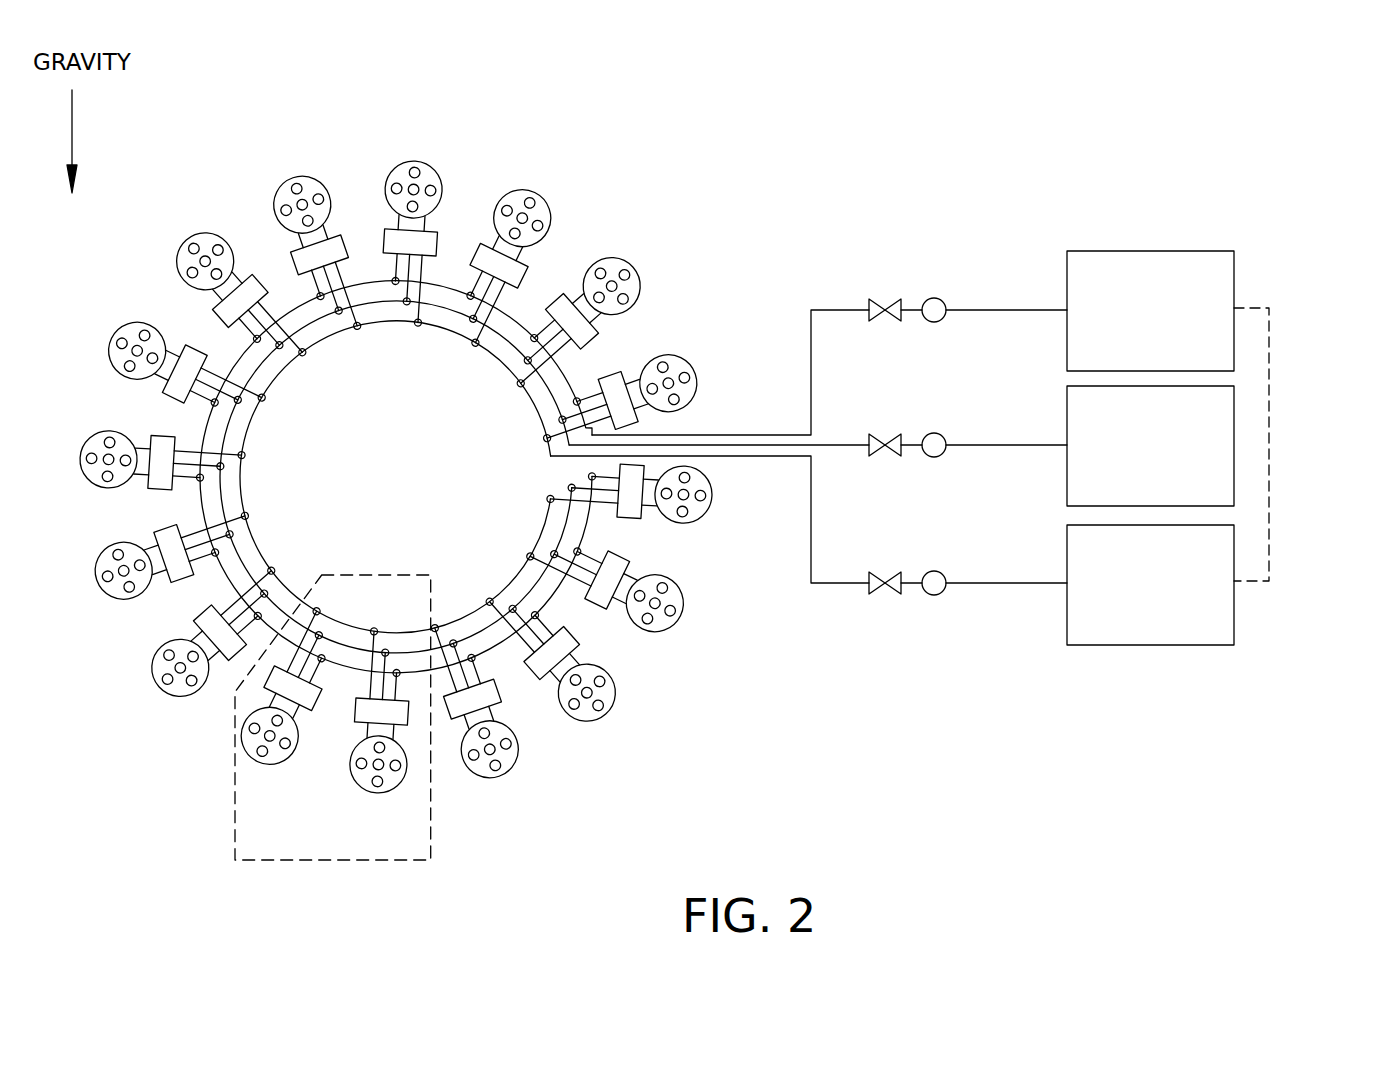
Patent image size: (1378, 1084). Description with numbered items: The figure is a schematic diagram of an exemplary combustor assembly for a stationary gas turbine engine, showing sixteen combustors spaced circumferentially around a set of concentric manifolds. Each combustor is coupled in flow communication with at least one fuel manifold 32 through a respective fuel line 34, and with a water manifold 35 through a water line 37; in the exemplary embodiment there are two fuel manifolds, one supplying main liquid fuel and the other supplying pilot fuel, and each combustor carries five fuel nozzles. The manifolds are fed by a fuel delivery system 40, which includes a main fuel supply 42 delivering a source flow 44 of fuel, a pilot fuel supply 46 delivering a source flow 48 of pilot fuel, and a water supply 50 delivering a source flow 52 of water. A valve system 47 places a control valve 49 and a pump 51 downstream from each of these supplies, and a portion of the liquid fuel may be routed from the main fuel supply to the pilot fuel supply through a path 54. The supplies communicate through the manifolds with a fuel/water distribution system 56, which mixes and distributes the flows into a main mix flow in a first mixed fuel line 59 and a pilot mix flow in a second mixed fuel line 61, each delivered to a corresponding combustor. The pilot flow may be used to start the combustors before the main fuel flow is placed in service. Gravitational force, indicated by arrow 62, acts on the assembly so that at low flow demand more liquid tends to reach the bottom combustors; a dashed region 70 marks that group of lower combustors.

The fuel manifold 32 is at (416, 477).
The fuel line 34 is at (418, 322).
The water manifold 35 is at (267, 357).
The water line 37 is at (583, 383).
The fuel delivery system 40 is at (964, 457).
The main fuel supply 42 is at (1234, 265).
The source flow of fuel 44 is at (967, 310).
The pilot fuel supply 46 is at (1234, 618).
The valve system 47 is at (820, 272).
The source flow of pilot fuel 48 is at (967, 583).
The control valve 49 is at (881, 300).
The water supply 50 is at (1234, 459).
The pump 51 is at (934, 298).
The source flow of water 52 is at (967, 445).
The path 54 is at (1269, 558).
The fuel/water distribution system 56 is at (632, 373).
The first mixed fuel line 59 is at (628, 376).
The second mixed fuel line 61 is at (644, 407).
The arrow 62 is at (73, 127).
The lower combustor group 70 is at (295, 860).